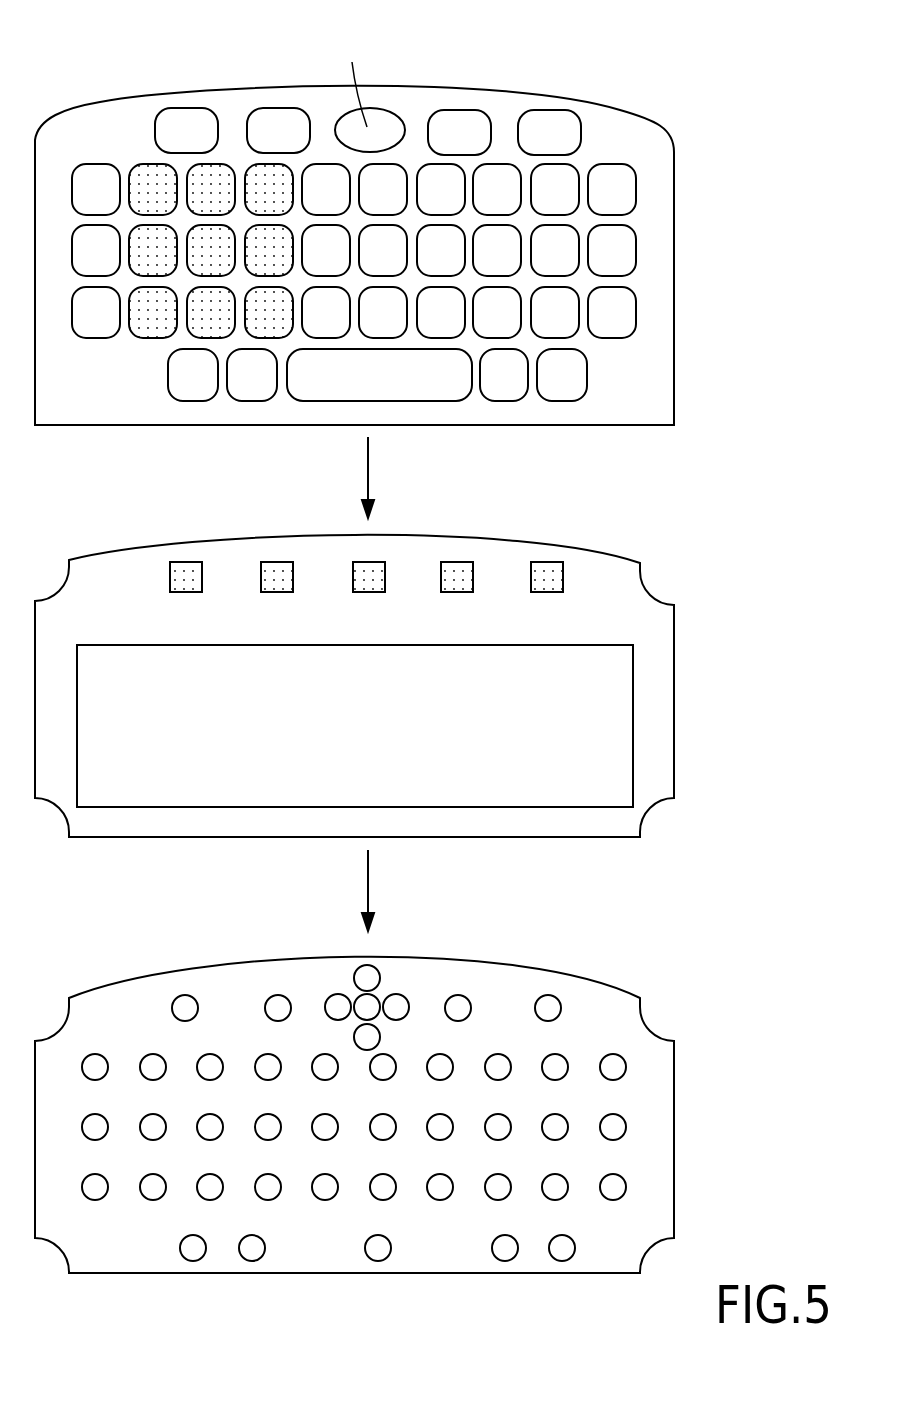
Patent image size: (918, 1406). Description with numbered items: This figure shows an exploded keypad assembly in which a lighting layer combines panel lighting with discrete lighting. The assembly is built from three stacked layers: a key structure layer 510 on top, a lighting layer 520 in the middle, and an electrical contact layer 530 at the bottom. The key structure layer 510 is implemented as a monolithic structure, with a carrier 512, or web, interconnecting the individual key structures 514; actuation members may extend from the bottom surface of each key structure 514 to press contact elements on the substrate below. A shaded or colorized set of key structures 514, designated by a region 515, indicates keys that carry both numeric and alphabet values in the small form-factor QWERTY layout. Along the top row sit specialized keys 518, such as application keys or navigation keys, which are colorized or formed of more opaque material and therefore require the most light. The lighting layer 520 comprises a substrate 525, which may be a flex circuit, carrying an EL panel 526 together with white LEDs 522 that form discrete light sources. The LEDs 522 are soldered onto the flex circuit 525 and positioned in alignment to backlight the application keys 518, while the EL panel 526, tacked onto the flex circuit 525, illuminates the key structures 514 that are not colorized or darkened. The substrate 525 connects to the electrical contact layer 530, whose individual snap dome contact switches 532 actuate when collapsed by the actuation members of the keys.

The key structure layer 510 is at (700, 258).
The carrier 512 is at (653, 407).
The key structures 514 is at (622, 188).
The region 515 is at (134, 352).
The specialized keys 518 is at (278, 127).
The lighting layer 520 is at (700, 682).
The LEDs 522 is at (369, 594).
The substrate 525 is at (674, 760).
The EL panel 526 is at (381, 772).
The electrical contact layer 530 is at (700, 1139).
The snap dome contact switches 532 is at (263, 1053).